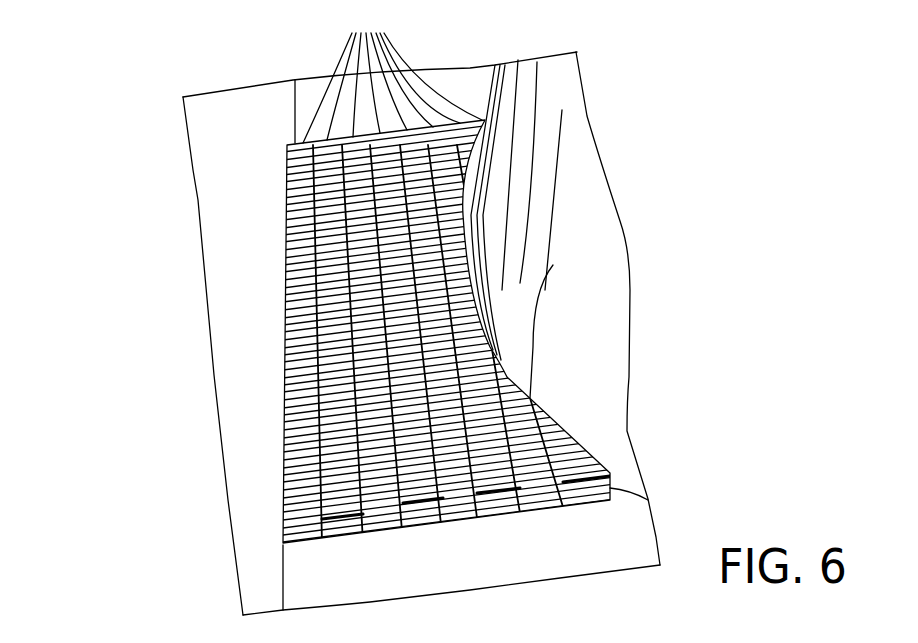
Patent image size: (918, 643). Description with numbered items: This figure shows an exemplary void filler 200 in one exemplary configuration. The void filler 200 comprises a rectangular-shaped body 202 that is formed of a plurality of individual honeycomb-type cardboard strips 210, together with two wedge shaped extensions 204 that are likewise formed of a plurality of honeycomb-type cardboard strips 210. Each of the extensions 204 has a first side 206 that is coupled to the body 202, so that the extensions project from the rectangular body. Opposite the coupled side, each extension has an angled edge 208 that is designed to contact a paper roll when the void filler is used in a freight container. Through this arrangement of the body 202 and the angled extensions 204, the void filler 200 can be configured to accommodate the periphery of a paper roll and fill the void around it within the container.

The void filler 200 is at (173, 152).
The rectangular-shaped body 202 is at (330, 350).
The wedge shaped extensions 204 is at (475, 157).
The first side 206 is at (508, 447).
The angled edge 208 is at (563, 432).
The honeycomb-type cardboard strips 210 is at (392, 73).